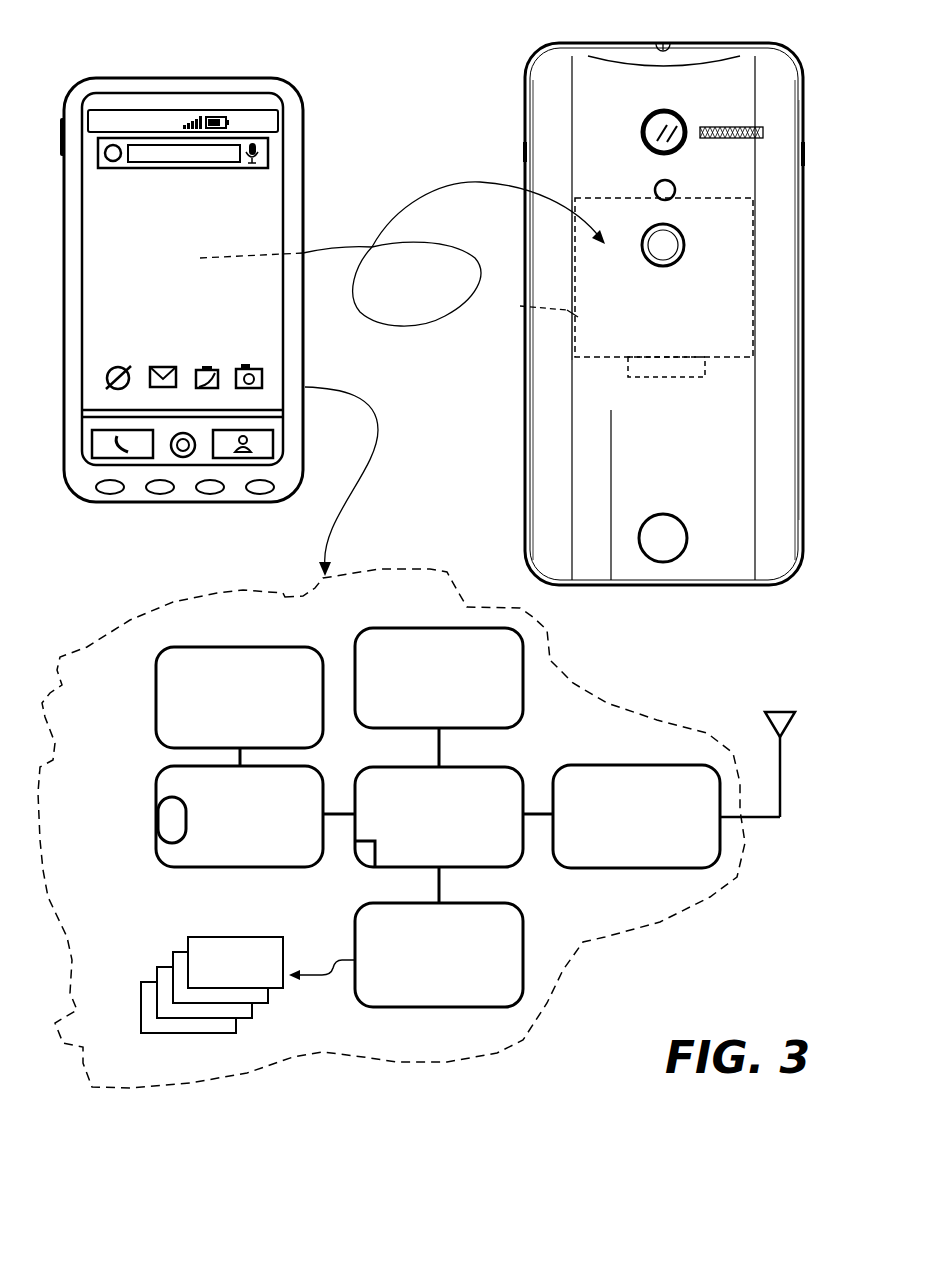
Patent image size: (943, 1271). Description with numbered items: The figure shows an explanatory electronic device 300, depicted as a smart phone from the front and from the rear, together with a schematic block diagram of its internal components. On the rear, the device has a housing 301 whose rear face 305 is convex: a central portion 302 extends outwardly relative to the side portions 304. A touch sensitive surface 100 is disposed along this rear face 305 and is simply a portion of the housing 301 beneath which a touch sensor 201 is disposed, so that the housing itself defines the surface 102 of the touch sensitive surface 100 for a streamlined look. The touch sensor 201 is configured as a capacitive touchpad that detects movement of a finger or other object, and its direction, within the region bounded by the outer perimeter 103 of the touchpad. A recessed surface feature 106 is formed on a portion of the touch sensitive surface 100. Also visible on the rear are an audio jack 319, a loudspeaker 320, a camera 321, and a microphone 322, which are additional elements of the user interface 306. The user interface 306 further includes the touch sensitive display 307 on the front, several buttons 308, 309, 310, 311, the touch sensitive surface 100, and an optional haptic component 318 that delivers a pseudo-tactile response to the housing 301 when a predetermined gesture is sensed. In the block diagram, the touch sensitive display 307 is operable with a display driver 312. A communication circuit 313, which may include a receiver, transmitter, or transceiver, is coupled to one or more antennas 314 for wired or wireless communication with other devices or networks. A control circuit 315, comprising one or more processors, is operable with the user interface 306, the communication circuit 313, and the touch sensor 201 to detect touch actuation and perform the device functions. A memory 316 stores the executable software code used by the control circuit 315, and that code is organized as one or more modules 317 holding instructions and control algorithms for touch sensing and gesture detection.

The touch sensitive surface 100 is at (221, 645).
The surface 102 is at (647, 303).
The outer perimeter 103 is at (573, 281).
The recessed surface feature 106 is at (678, 248).
The touch sensor 201 is at (520, 306).
The electronic device 300 is at (324, 160).
The housing 301 is at (776, 352).
The central portion 302 is at (659, 458).
The side portions 304 is at (550, 557).
The rear face 305 is at (722, 443).
The user interface 306 is at (203, 868).
The touch sensitive display 307 is at (240, 290).
The button 308 is at (110, 494).
The button 309 is at (160, 494).
The button 310 is at (210, 494).
The button 311 is at (260, 494).
The display driver 312 is at (525, 682).
The communication circuit 313 is at (674, 765).
The antenna 314 is at (766, 716).
The control circuit 315 is at (482, 867).
The memory 316 is at (467, 1007).
The modules 317 is at (140, 992).
The haptic component 318 is at (700, 363).
The audio jack 319 is at (668, 40).
The loudspeaker 320 is at (738, 126).
The camera 321 is at (656, 121).
The microphone 322 is at (655, 185).